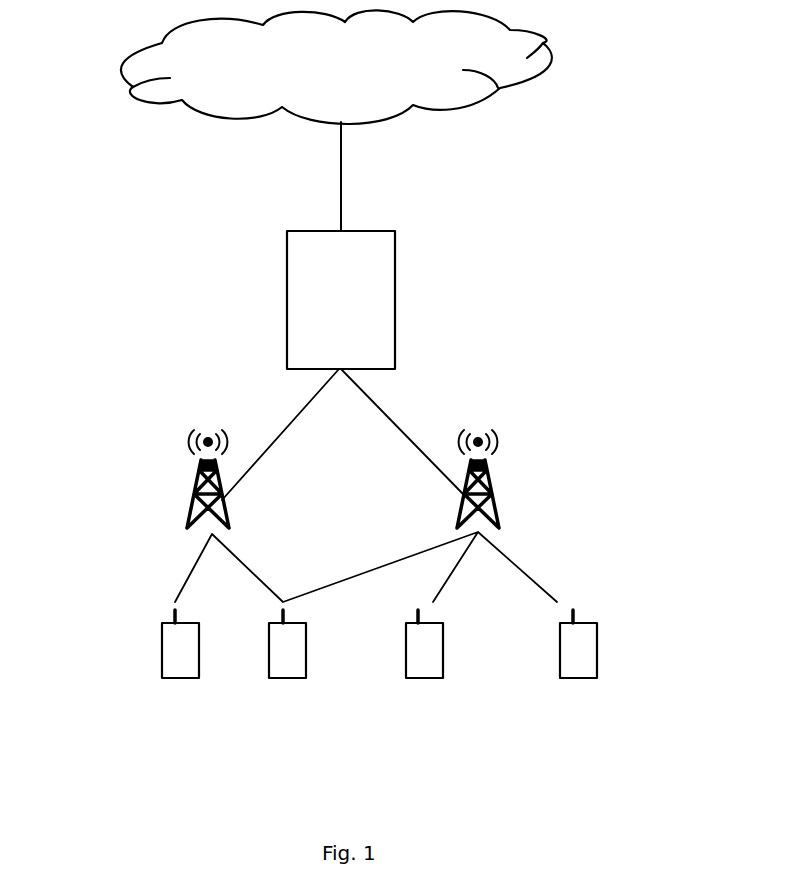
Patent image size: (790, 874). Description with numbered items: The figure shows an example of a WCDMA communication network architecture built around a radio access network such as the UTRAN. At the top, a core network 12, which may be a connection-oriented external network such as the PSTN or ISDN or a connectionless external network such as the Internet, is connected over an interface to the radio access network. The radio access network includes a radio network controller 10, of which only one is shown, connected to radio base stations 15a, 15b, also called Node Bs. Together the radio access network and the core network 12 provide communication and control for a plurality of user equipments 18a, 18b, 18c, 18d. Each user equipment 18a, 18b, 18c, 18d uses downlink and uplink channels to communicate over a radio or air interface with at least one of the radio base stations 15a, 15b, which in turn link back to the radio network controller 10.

The core network 12 is at (553, 56).
The radio network controller 10 is at (395, 291).
The radio base station 15a is at (195, 490).
The radio base station 15b is at (492, 476).
The user equipment 18a is at (162, 648).
The user equipment 18b is at (280, 682).
The user equipment 18c is at (415, 682).
The user equipment 18d is at (597, 652).